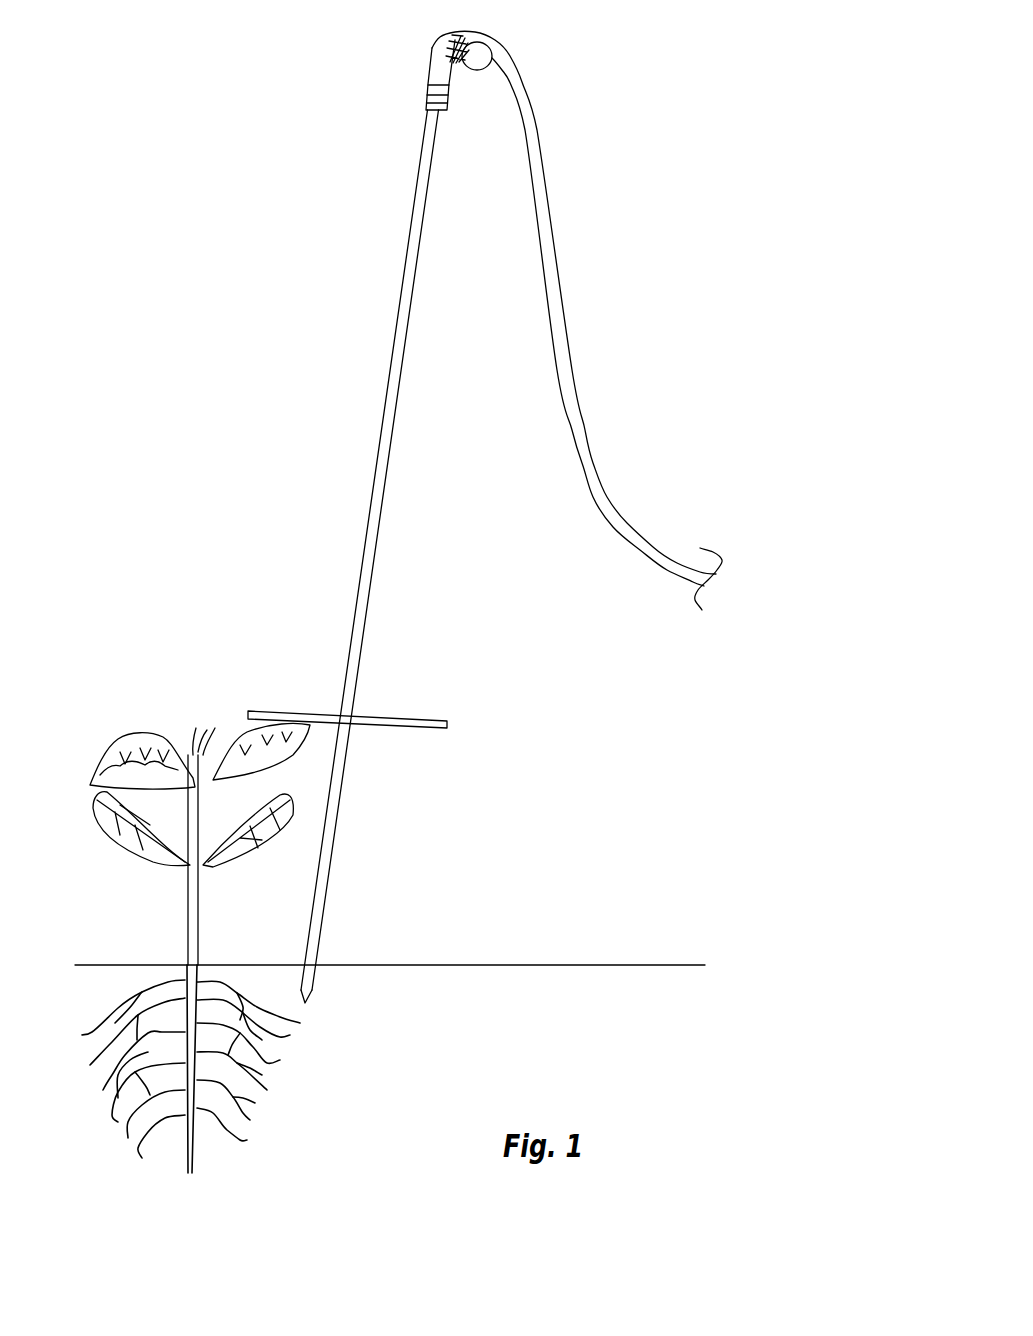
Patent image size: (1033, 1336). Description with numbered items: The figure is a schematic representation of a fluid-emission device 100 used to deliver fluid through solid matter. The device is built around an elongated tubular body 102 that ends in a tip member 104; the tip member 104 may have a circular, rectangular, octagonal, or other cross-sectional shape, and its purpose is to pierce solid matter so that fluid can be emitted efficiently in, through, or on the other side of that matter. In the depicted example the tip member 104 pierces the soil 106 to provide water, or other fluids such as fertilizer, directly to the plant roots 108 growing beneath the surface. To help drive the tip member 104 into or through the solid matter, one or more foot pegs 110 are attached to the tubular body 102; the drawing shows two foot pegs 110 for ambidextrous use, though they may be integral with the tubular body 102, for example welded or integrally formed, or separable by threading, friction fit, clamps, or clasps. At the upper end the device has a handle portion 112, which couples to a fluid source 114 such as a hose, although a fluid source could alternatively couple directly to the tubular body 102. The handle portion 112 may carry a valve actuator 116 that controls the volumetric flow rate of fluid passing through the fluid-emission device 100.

The fluid-emission device 100 is at (630, 104).
The tubular body 102 is at (447, 120).
The tip member 104 is at (322, 980).
The soil 106 is at (705, 965).
The plant roots 108 is at (287, 1063).
The foot peg 110 is at (445, 718).
The handle portion 112 is at (436, 24).
The fluid source 114 is at (591, 448).
The valve actuator 116 is at (483, 33).